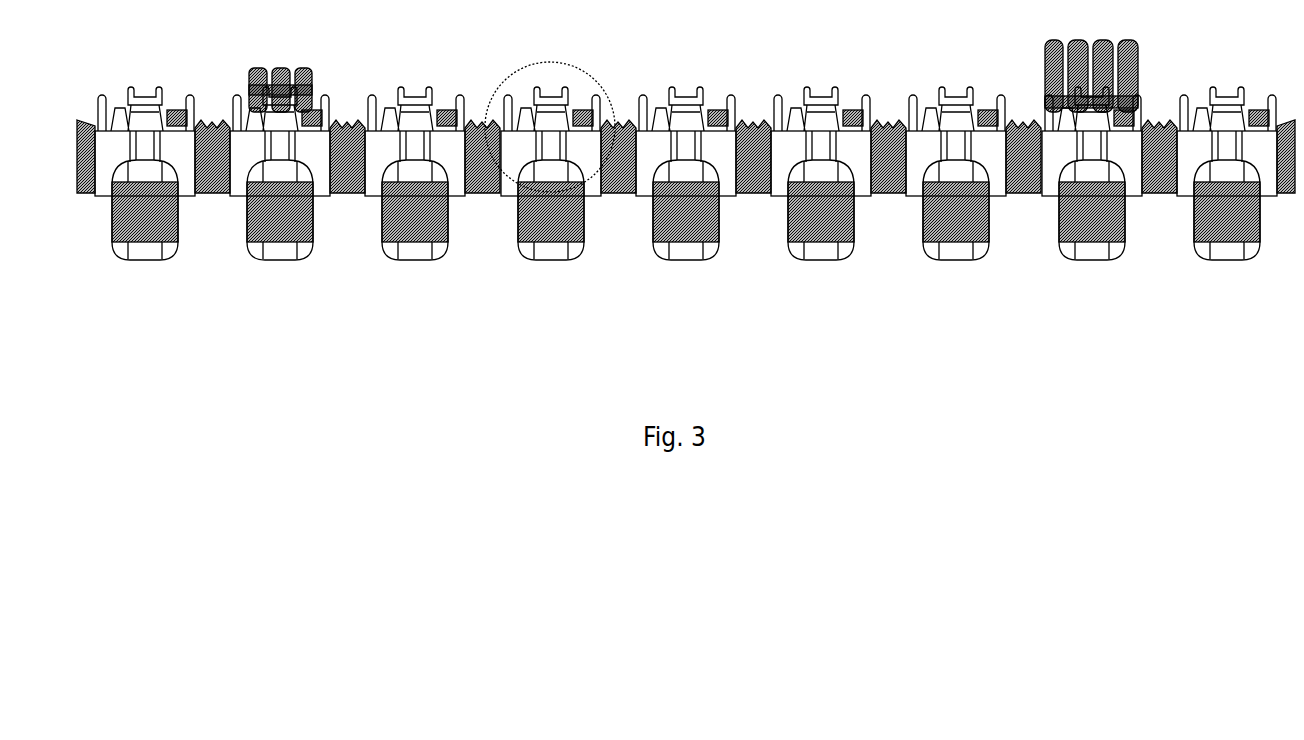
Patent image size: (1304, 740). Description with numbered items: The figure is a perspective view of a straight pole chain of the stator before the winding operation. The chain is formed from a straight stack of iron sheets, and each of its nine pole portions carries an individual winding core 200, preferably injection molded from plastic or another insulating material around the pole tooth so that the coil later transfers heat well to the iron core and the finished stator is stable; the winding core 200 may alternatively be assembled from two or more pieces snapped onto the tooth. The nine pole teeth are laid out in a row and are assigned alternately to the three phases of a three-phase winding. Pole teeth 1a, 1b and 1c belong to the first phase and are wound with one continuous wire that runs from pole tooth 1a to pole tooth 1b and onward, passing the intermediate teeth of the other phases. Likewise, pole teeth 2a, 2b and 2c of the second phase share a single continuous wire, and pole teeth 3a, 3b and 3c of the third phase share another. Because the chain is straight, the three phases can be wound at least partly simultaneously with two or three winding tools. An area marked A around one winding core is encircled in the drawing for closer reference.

The winding core 200 is at (848, 124).
The detail region A is at (578, 70).
The pole tooth 1a is at (1227, 252).
The pole tooth 2a is at (1092, 252).
The pole tooth 3a is at (956, 252).
The pole tooth 1b is at (821, 252).
The pole tooth 2b is at (686, 252).
The pole tooth 3b is at (551, 252).
The pole tooth 1c is at (415, 252).
The pole tooth 2c is at (280, 252).
The pole tooth 3c is at (145, 252).